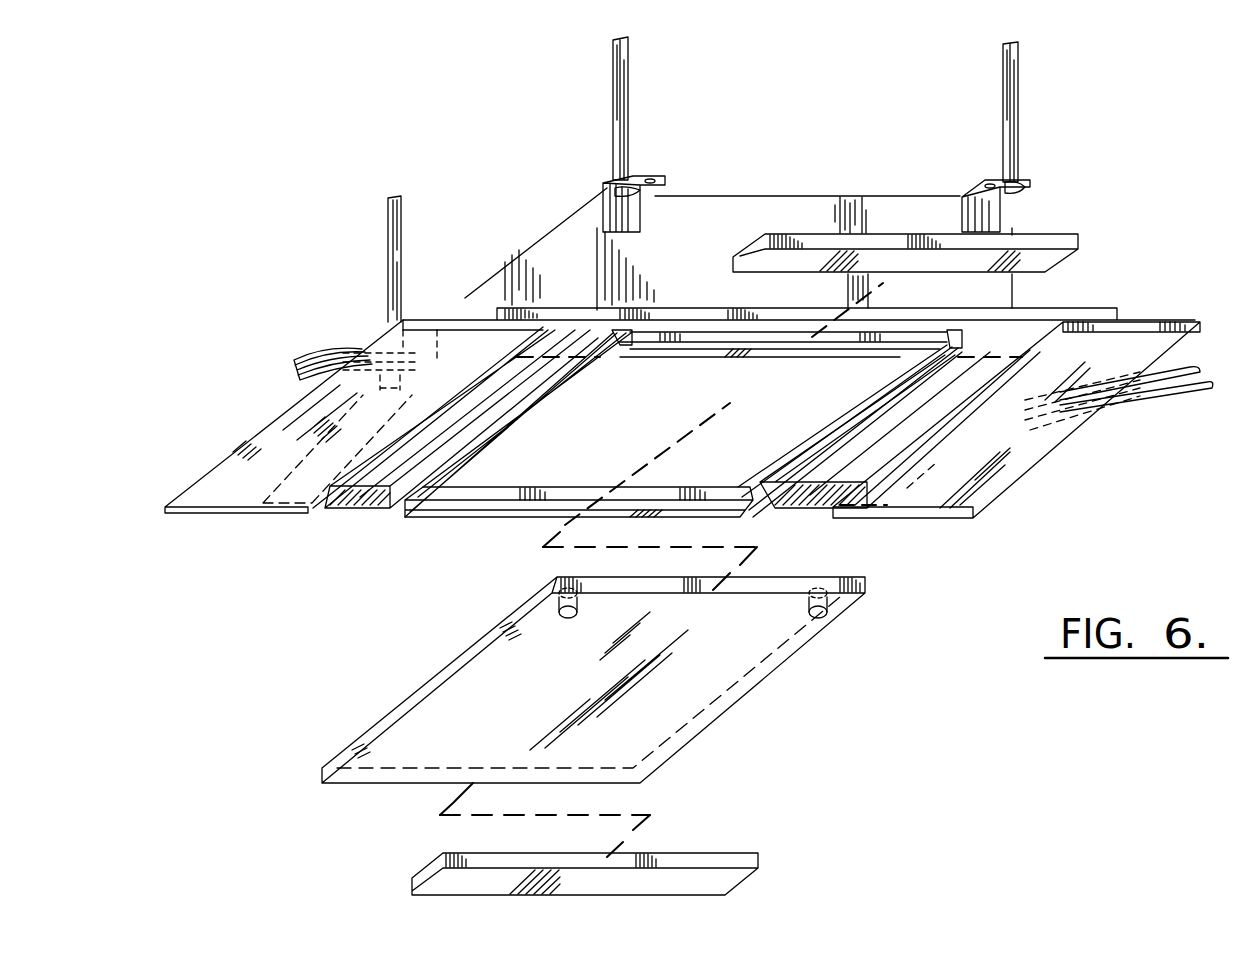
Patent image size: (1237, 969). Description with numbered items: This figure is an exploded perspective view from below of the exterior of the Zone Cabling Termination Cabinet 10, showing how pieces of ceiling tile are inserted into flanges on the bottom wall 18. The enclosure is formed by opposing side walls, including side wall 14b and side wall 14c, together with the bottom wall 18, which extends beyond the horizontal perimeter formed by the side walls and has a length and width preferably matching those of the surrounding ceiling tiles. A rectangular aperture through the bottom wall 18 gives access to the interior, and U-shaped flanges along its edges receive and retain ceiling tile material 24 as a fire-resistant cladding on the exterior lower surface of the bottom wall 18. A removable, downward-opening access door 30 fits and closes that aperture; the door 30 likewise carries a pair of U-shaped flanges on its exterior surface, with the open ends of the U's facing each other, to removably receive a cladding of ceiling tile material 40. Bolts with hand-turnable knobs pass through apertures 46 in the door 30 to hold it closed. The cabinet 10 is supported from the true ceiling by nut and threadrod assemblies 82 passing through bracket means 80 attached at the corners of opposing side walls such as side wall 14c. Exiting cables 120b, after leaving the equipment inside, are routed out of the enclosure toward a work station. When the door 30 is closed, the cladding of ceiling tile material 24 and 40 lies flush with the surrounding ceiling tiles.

The Zone Cabling Termination Cabinet 10 is at (497, 132).
The side wall 14b is at (567, 257).
The side wall 14c is at (738, 222).
The bottom wall 18 is at (390, 497).
The ceiling tile material 24 is at (933, 263).
The access door 30 is at (523, 470).
The ceiling tile material 40 is at (737, 660).
The apertures 46 is at (557, 592).
The bracket means 80 is at (605, 207).
The nut and threadrod assemblies 82 is at (603, 178).
The exiting cables 120b is at (343, 355).